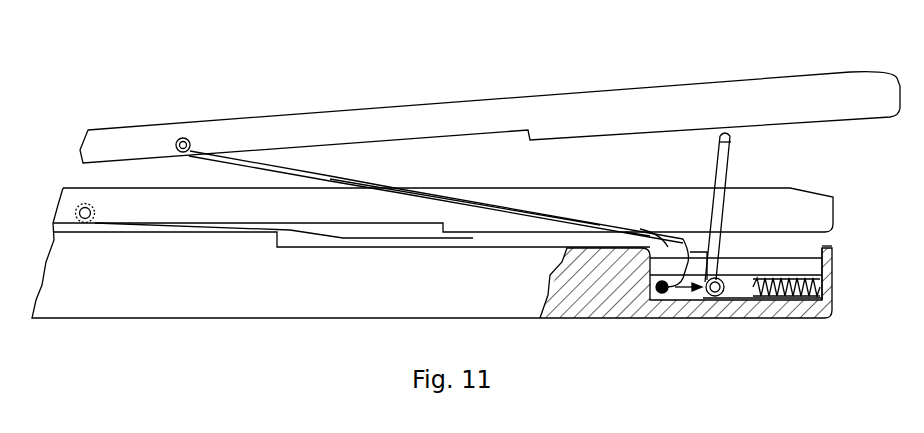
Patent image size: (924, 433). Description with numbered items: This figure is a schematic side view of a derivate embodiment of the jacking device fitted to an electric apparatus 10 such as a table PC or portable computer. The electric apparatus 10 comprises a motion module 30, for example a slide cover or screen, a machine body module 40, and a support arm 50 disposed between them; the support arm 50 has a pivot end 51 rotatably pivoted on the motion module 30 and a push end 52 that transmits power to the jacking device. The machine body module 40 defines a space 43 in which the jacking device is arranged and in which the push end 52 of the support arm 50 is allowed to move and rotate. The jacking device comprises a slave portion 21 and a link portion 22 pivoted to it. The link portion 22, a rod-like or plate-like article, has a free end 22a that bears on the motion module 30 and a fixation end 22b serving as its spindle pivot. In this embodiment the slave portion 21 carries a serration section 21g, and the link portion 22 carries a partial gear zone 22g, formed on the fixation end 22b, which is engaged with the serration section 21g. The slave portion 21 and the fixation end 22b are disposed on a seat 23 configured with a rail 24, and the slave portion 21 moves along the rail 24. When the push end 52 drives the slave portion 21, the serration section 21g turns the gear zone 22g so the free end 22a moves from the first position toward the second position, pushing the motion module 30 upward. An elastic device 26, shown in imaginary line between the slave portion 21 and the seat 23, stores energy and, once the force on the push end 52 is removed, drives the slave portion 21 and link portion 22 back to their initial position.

The electric apparatus 10 is at (312, 108).
The motion module 30 is at (128, 194).
The pivot end 51 is at (84, 205).
The machine body module 40 is at (185, 320).
The support arm 50 is at (355, 250).
The push end 52 is at (643, 237).
The space 43 is at (662, 235).
The link portion 22 is at (747, 246).
The free end 22a is at (718, 136).
The fixation end 22b is at (694, 238).
The serration section 21g is at (740, 270).
The gear zone 22g is at (685, 300).
The slave portion 21 is at (735, 298).
The seat 23 is at (762, 299).
The elastic device 26 is at (790, 308).
The rail 24 is at (810, 312).